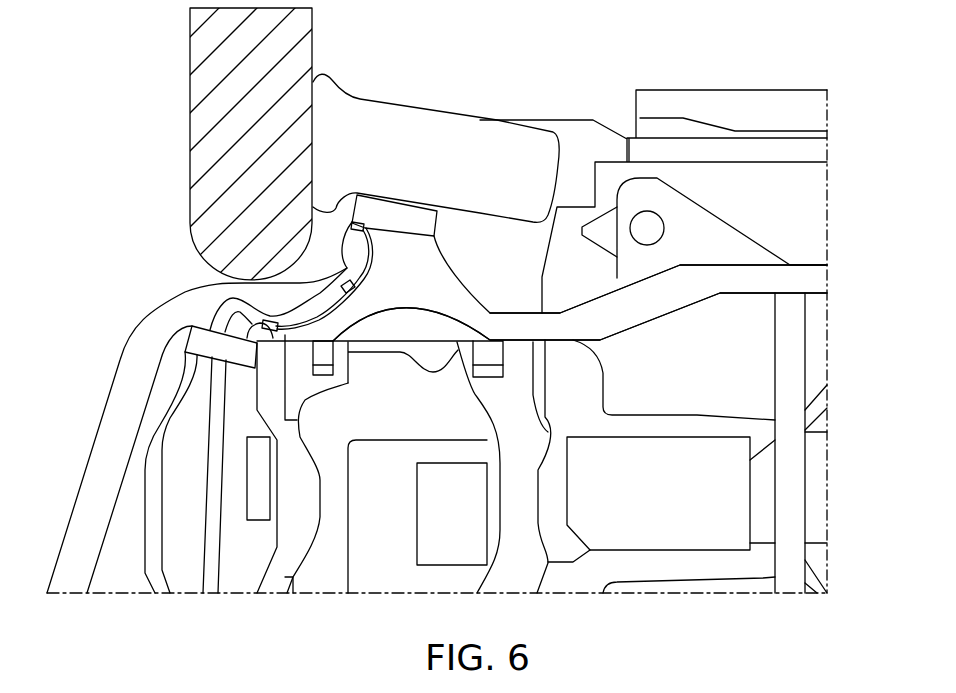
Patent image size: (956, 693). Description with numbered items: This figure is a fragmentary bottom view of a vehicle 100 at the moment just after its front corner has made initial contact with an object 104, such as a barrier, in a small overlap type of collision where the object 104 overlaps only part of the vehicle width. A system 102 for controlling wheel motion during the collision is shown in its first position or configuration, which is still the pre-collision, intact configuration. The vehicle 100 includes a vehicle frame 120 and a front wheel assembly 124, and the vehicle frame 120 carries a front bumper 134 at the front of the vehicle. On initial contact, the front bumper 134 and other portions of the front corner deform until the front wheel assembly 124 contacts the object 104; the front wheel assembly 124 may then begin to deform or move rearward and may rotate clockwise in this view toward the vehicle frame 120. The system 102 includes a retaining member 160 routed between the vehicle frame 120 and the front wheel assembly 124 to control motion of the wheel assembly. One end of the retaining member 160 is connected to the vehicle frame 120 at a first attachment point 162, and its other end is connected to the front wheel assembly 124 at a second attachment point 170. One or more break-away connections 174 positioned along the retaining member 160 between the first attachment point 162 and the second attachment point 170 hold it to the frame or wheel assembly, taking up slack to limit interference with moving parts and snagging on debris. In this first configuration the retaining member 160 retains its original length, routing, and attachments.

The vehicle 100 is at (722, 58).
The system 102 is at (165, 279).
The object 104 is at (210, 110).
The vehicle frame 120 is at (612, 300).
The front wheel assembly 124 is at (427, 92).
The front bumper 134 is at (153, 482).
The retaining member 160 is at (328, 316).
The first attachment point 162 is at (272, 337).
The second attachment point 170 is at (378, 205).
The break-away connections 174 is at (353, 289).